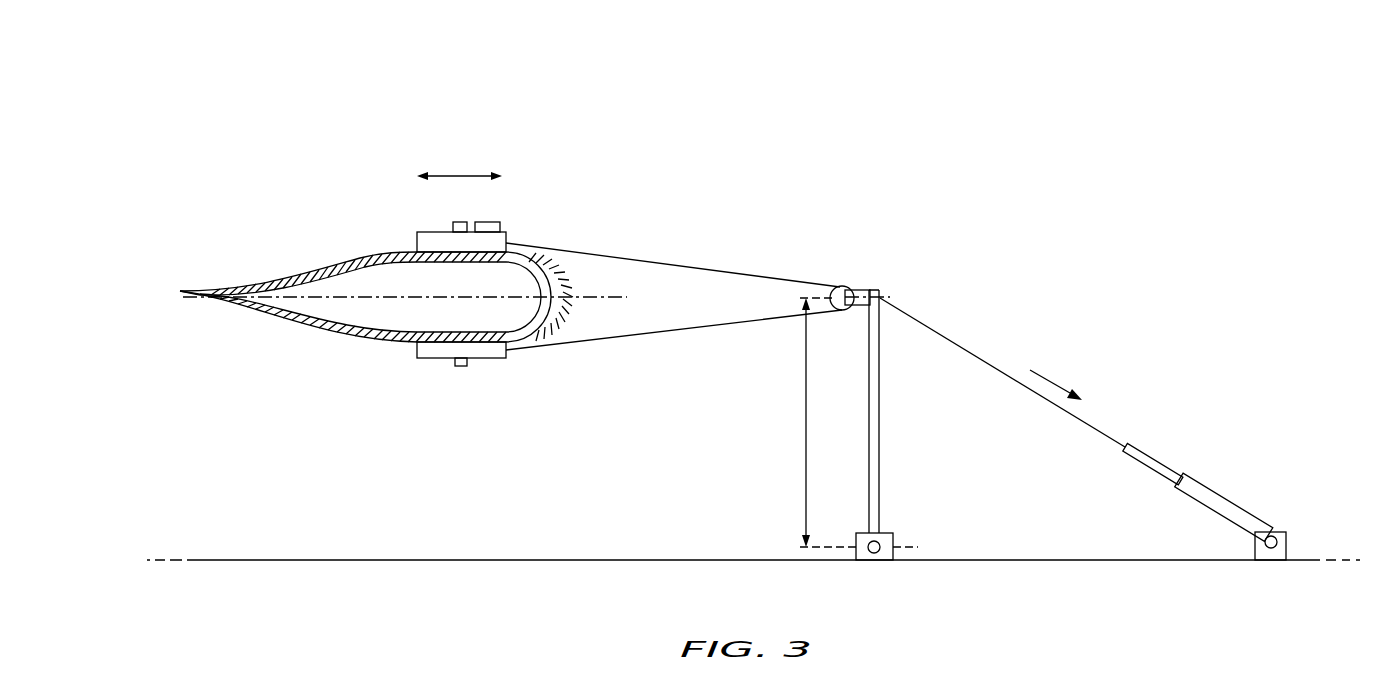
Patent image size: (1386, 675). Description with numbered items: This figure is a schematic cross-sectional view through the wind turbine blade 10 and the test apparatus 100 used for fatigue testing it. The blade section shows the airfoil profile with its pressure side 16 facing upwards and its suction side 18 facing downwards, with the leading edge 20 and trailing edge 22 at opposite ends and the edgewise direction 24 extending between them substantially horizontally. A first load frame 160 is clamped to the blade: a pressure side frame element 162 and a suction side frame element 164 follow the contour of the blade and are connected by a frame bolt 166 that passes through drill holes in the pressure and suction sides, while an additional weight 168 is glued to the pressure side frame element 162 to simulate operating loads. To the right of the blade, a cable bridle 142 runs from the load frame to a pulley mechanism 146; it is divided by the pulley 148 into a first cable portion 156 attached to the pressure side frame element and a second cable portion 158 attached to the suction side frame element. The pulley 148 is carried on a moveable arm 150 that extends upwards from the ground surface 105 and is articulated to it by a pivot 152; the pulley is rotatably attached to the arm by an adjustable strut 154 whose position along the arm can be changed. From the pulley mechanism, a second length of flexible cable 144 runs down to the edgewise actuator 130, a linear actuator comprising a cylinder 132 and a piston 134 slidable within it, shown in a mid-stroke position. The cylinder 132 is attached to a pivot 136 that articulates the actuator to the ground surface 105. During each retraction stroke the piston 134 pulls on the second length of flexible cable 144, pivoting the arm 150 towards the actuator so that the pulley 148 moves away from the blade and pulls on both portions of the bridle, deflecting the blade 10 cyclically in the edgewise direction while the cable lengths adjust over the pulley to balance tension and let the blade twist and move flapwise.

The test apparatus 100 is at (380, 118).
The wind turbine blade 10 is at (286, 330).
The pressure side 16 is at (333, 272).
The suction side 18 is at (333, 330).
The leading edge 20 is at (577, 306).
The trailing edge 22 is at (182, 289).
The edgewise direction 24 is at (584, 297).
The ground surface 105 is at (1102, 563).
The edgewise actuator 130 is at (1221, 458).
The cylinder 132 is at (1250, 510).
The piston 134 is at (1143, 452).
The pivot 136 is at (1287, 540).
The cable bridle 142 is at (674, 300).
The second length of flexible cable 144 is at (1045, 403).
The pulley mechanism 146 is at (843, 242).
The pulley 148 is at (846, 312).
The moveable arm 150 is at (880, 459).
The pivot 152 is at (882, 540).
The adjustable strut 154 is at (860, 290).
The first cable portion 156 is at (643, 259).
The second cable portion 158 is at (660, 332).
The first load frame 160 is at (425, 388).
The pressure side frame element 162 is at (413, 244).
The suction side frame element 164 is at (413, 350).
The frame bolt 166 is at (467, 363).
The additional weight 168 is at (502, 226).